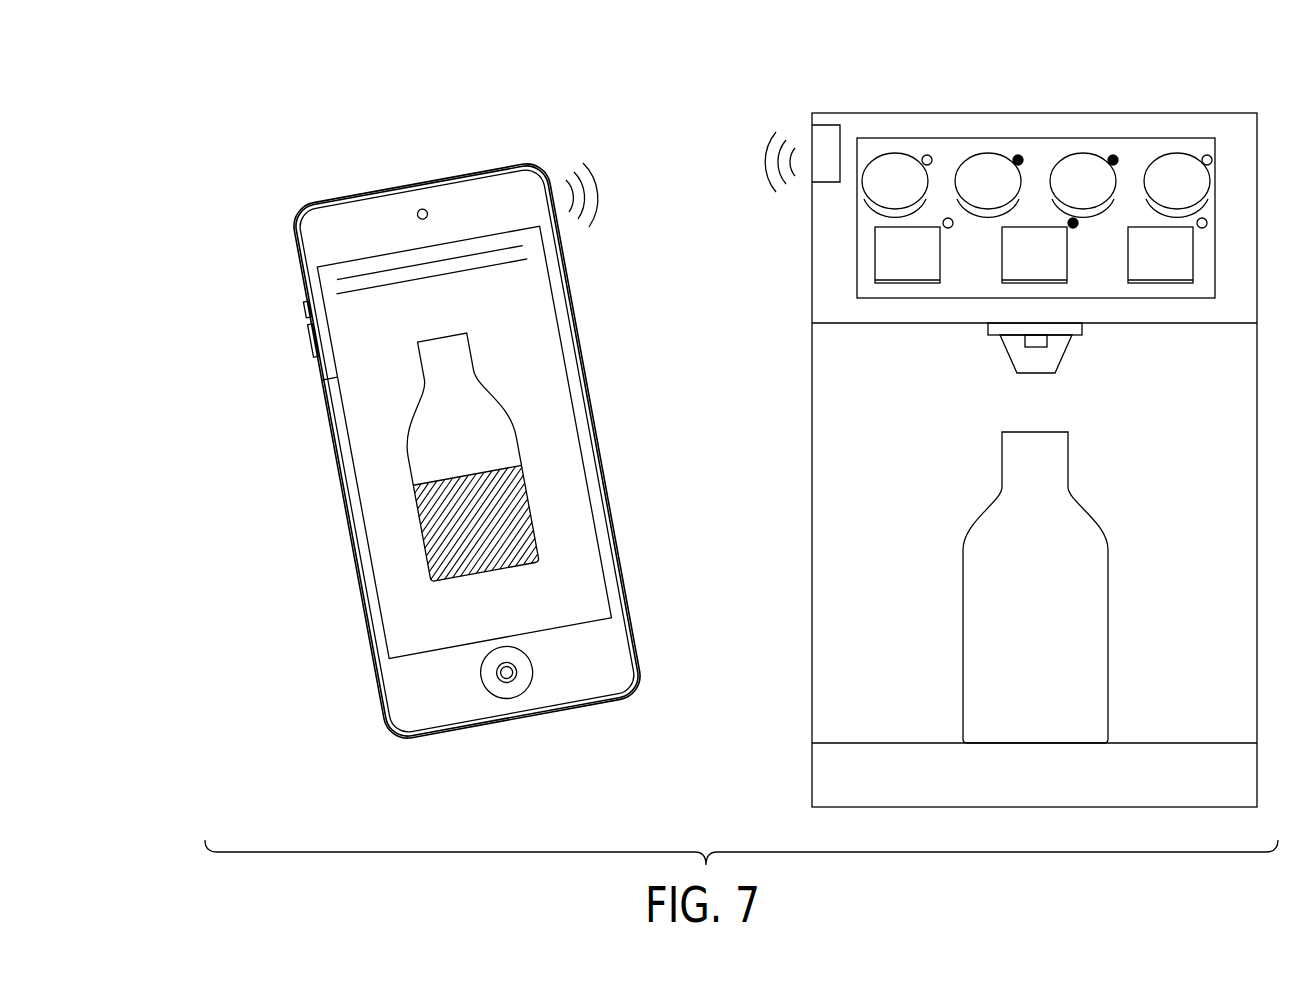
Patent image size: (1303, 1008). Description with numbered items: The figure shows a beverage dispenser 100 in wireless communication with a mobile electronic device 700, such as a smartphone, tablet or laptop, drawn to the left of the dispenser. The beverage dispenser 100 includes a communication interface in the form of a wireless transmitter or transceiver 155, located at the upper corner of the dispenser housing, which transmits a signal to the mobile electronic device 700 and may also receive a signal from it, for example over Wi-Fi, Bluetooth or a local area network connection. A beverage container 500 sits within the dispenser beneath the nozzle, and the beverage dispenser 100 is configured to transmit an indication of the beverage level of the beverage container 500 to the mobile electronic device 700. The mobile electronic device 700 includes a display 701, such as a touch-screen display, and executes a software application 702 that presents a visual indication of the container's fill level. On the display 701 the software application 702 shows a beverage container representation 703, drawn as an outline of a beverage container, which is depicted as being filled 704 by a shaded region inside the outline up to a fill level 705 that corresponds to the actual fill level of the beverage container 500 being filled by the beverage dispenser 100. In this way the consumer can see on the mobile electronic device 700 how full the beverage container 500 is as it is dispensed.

The mobile electronic device 700 is at (270, 192).
The display 701 is at (320, 383).
The software application 702 is at (375, 427).
The beverage container representation 703 is at (407, 459).
The filled region 704 is at (512, 525).
The fill level 705 is at (495, 466).
The beverage dispenser 100 is at (1042, 95).
The wireless transmitter or transceiver 155 is at (829, 133).
The beverage container 500 is at (947, 523).